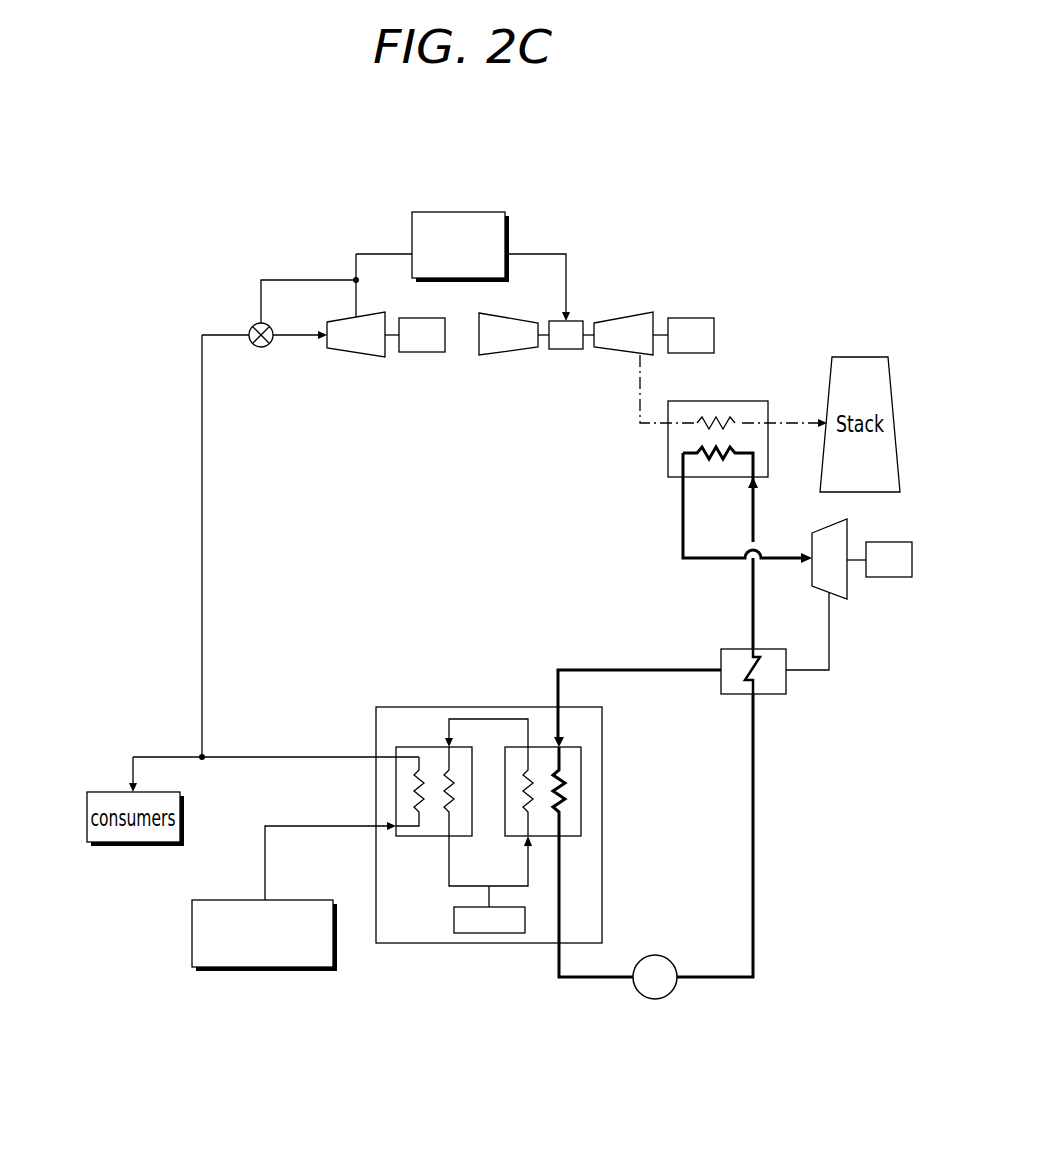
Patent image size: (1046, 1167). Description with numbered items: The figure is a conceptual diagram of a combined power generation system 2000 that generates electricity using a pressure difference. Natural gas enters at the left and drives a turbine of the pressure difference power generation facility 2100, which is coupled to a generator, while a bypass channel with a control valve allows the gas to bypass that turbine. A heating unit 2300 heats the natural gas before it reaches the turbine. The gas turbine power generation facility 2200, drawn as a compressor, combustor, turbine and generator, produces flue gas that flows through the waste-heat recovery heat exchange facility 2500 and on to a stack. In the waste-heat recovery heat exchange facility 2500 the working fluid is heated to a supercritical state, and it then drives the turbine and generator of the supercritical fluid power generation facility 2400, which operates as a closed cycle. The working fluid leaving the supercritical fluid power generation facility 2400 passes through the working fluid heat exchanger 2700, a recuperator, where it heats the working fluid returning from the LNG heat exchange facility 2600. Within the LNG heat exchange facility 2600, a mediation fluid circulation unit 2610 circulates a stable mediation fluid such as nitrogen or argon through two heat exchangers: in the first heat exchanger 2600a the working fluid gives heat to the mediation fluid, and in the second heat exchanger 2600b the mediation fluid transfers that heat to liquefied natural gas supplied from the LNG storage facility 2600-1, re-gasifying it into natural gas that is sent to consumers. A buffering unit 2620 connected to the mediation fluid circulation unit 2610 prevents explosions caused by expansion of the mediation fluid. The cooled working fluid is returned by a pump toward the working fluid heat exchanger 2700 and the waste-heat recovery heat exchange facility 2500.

The combined power generation system 2000 is at (773, 189).
The pressure difference power generation facility 2100 is at (352, 358).
The gas turbine power generation facility 2200 is at (630, 307).
The heating unit 2300 is at (458, 212).
The supercritical fluid power generation facility 2400 is at (865, 597).
The waste-heat recovery heat exchange facility 2500 is at (715, 401).
The LNG heat exchange facility 2600 is at (490, 707).
The first heat exchanger 2600a is at (583, 793).
The second heat exchanger 2600b is at (396, 793).
The LNG storage facility 2600-1 is at (278, 900).
The mediation fluid circulation unit 2610 is at (450, 878).
The buffering unit 2620 is at (490, 933).
The working fluid heat exchanger 2700 is at (743, 649).